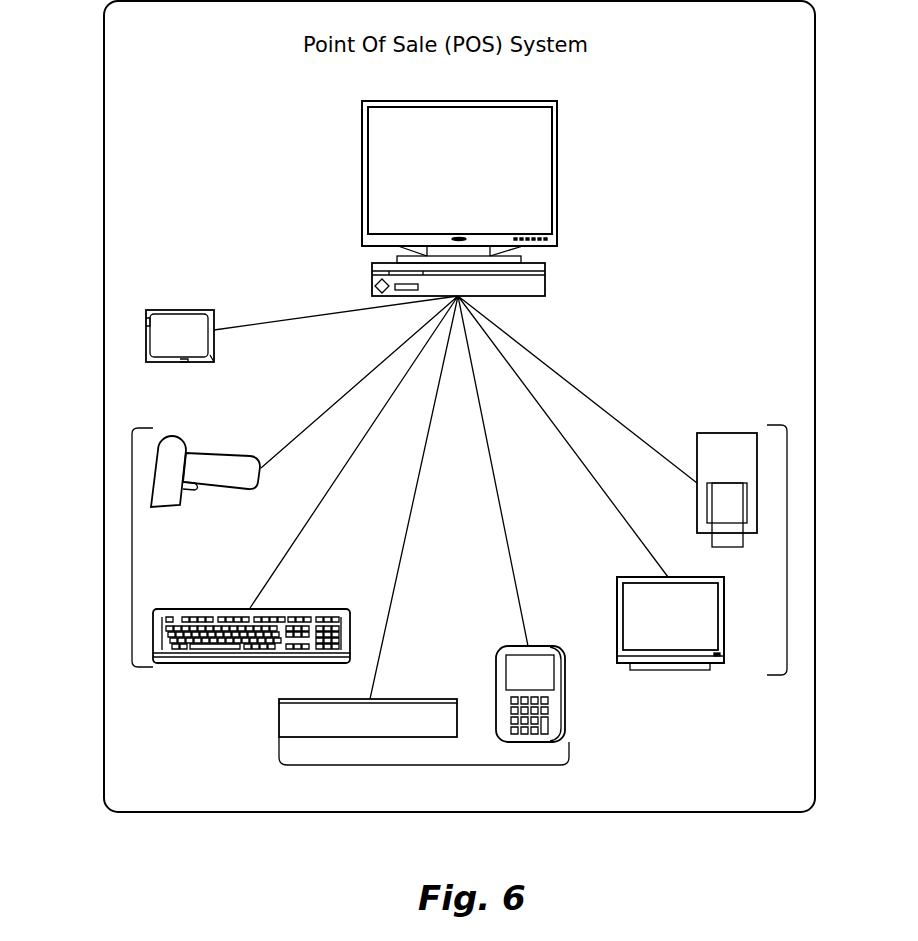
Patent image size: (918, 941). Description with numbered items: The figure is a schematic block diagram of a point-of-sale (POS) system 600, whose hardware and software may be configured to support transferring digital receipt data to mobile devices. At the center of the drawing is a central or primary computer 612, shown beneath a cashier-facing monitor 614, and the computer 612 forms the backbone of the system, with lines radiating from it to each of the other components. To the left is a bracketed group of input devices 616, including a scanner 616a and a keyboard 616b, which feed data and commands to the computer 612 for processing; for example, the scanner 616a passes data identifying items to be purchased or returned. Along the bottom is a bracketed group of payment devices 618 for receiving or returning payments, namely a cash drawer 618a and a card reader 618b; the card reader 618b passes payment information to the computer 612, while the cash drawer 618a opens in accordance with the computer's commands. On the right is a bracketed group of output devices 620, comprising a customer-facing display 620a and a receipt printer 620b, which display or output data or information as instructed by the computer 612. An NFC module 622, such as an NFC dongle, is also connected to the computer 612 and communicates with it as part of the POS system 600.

The point-of-sale (POS) system 600 is at (596, 46).
The computer 612 is at (565, 265).
The monitor 614 is at (356, 185).
The input devices 616 is at (132, 548).
The scanner 616a is at (172, 434).
The keyboard 616b is at (171, 608).
The payment devices 618 is at (425, 765).
The cash drawer 618a is at (279, 724).
The card reader 618b is at (568, 683).
The output devices 620 is at (787, 552).
The customer-facing display 620a is at (636, 577).
The receipt printer 620b is at (710, 433).
The NFC module 622 is at (171, 310).